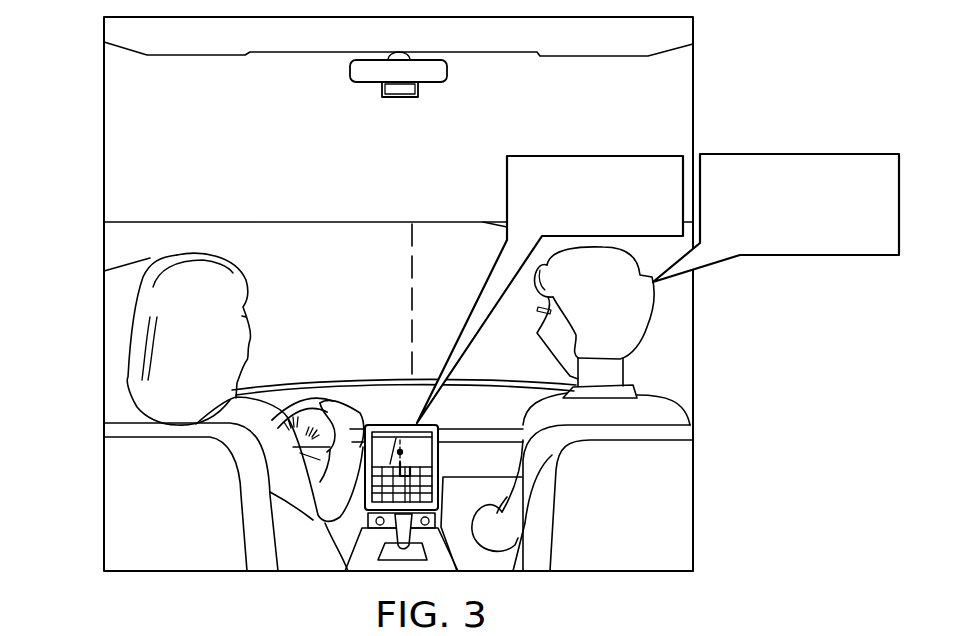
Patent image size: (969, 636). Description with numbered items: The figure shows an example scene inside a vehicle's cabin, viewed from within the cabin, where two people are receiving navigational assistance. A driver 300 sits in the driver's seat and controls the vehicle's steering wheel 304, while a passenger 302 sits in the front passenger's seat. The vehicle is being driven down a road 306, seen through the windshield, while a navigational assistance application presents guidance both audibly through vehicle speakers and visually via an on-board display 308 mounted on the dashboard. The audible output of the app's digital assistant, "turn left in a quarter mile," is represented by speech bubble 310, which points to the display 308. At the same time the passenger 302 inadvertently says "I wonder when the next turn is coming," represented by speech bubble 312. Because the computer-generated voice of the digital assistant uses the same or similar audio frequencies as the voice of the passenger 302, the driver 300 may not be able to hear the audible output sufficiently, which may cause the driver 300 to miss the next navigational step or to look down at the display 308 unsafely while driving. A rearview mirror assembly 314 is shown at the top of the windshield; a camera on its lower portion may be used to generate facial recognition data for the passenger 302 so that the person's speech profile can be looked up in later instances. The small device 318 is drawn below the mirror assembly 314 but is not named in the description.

The driver 300 is at (104, 293).
The passenger 302 is at (640, 313).
The steering wheel 304 is at (303, 398).
The road 306 is at (316, 147).
The on-board display 308 is at (372, 425).
The speech bubble 310 is at (596, 156).
The speech bubble 312 is at (800, 154).
The rearview mirror assembly 314 is at (349, 70).
The camera device 318 is at (405, 97).